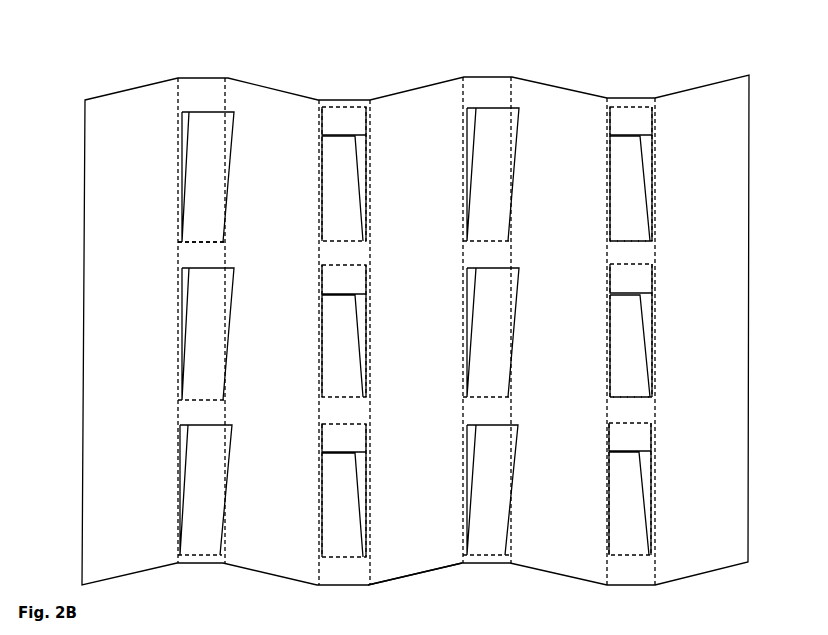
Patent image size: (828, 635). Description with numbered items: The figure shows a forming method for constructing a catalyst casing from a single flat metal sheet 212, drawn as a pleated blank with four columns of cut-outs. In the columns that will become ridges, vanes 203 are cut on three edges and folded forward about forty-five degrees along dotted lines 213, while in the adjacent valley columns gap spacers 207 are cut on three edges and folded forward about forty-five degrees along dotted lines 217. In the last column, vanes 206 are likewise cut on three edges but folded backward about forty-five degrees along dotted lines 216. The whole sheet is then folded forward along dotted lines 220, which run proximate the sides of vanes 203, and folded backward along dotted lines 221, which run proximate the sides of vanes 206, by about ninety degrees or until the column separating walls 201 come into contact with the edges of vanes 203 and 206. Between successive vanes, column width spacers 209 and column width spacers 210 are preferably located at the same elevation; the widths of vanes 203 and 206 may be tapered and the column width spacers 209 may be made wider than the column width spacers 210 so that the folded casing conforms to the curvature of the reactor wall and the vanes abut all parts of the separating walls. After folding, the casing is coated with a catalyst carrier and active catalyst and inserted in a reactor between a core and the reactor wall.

The column separating wall 201 is at (120, 328).
The vane 203 is at (207, 137).
The vane 206 is at (630, 183).
The gap spacer 207 is at (337, 118).
The column width spacer 209 is at (200, 416).
The column width spacer 210 is at (627, 408).
The metal sheet 212 is at (415, 590).
The dotted line 213 is at (200, 240).
The dotted line 216 is at (633, 238).
The dotted line 217 is at (353, 105).
The dotted line 220 is at (464, 76).
The dotted line 221 is at (607, 97).